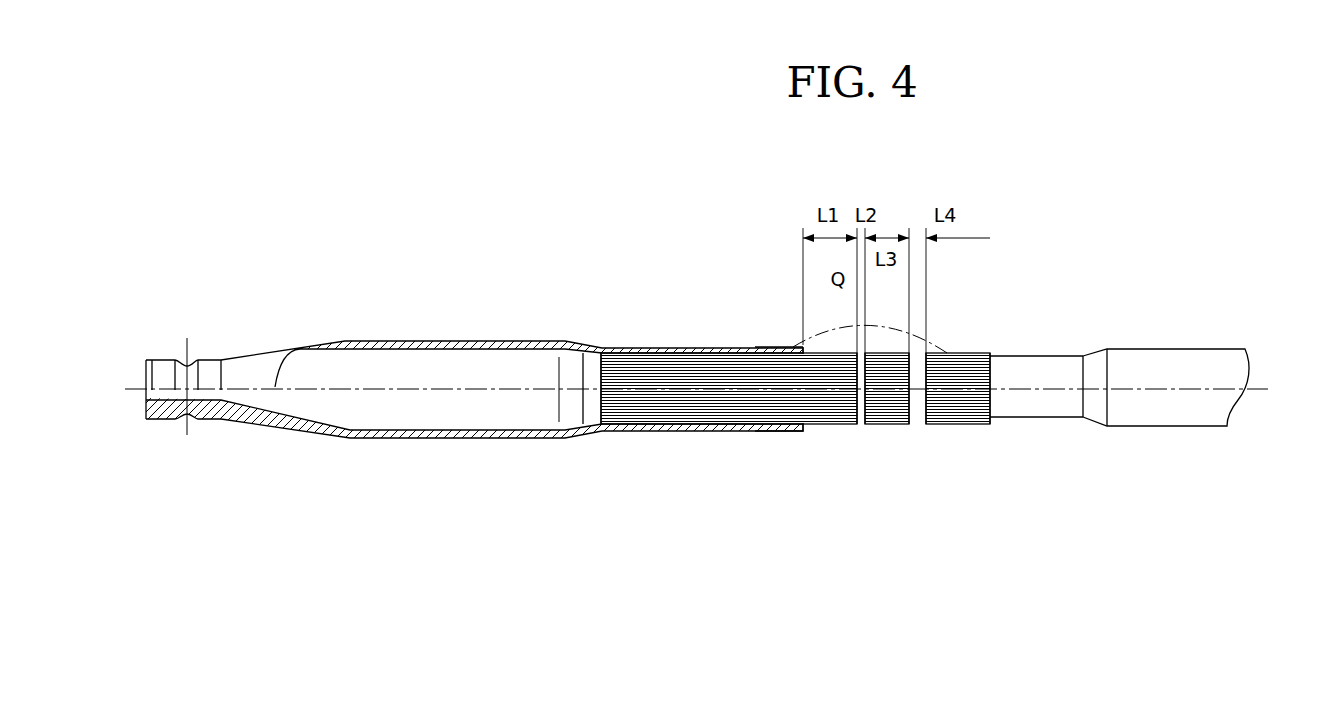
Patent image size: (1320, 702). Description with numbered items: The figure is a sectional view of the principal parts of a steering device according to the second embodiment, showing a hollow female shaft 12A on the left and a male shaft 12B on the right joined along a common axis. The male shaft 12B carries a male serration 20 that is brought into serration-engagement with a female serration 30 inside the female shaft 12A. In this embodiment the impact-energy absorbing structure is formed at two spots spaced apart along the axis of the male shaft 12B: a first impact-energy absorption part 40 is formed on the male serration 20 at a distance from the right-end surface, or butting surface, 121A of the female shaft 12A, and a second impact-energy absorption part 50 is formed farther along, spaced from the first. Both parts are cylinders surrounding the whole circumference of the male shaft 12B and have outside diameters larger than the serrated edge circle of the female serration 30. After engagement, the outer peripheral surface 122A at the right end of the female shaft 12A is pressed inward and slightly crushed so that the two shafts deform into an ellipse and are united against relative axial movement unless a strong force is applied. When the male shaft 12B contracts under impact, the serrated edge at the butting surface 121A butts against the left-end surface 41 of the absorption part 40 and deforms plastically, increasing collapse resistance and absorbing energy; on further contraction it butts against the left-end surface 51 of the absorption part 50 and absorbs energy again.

The female shaft 12A is at (483, 343).
The male shaft 12B is at (1142, 360).
The right-end surface (butting surface) of the female shaft 121A is at (797, 313).
The outer peripheral surface of the right-end of the female shaft 122A is at (755, 434).
The female serration 30 is at (708, 407).
The impact-energy absorption part 40 is at (860, 425).
The left-end surface (butting surface) of the impact-energy absorption part 41 is at (856, 316).
The impact-energy absorption part 50 is at (915, 425).
The left-end surface (butting surface) of the impact-energy absorption part 51 is at (911, 287).
The male serration 20 is at (965, 446).